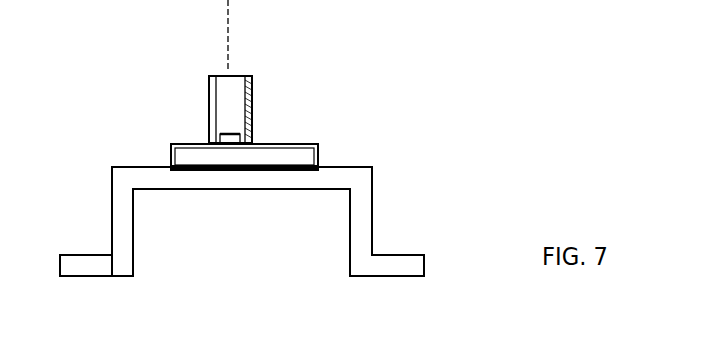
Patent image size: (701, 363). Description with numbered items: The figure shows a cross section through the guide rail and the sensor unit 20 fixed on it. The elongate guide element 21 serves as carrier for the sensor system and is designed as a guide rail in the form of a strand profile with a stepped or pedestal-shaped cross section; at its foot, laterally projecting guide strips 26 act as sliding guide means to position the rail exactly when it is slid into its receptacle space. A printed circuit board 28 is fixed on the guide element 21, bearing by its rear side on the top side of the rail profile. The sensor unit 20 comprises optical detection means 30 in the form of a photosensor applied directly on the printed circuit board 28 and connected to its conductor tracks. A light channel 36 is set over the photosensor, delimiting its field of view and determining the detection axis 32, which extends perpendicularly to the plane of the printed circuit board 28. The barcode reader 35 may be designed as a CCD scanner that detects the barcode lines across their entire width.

The sensor unit 20 is at (177, 80).
The guide element 21 is at (364, 170).
The guide strips 26 is at (74, 270).
The printed circuit board 28 is at (318, 147).
The optical detection means 30 is at (210, 134).
The detection axis 32 is at (226, 18).
The barcode reader 35 is at (257, 135).
The light channel 36 is at (250, 88).